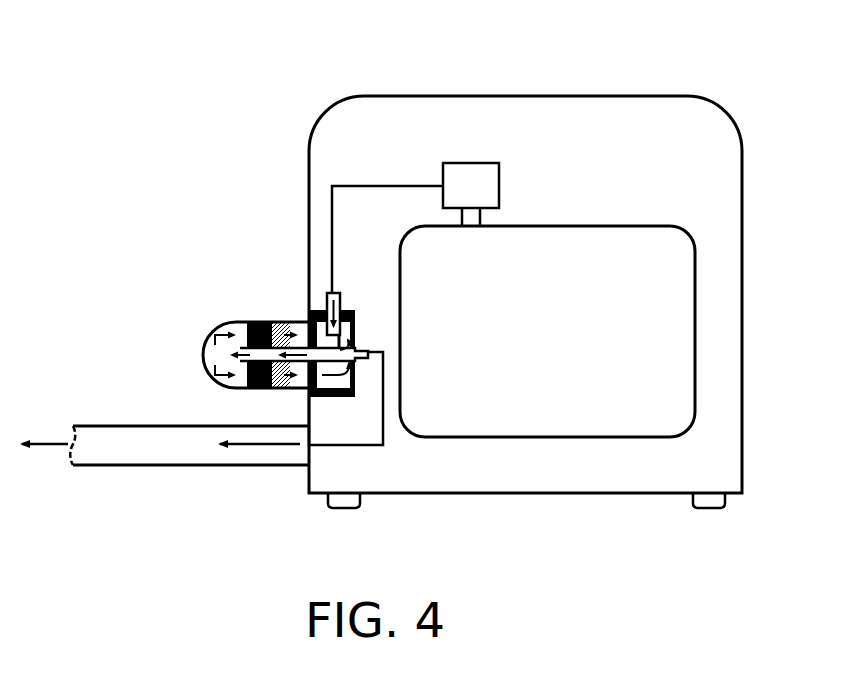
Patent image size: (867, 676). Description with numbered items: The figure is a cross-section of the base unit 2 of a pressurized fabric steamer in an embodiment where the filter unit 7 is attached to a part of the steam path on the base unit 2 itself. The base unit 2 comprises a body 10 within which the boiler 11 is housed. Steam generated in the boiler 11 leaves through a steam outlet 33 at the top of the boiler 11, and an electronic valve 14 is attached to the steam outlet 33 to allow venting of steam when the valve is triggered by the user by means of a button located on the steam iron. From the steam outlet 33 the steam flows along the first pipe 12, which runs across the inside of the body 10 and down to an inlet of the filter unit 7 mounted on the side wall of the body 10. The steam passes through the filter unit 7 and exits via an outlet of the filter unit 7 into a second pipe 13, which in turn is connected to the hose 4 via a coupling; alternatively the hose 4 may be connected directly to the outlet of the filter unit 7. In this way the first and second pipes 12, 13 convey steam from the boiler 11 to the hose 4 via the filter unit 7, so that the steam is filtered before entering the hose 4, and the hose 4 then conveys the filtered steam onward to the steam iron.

The base unit 2 is at (158, 98).
The hose 4 is at (153, 443).
The filter unit 7 is at (206, 335).
The body 10 is at (521, 96).
The boiler 11 is at (563, 341).
The first pipe 12 is at (378, 186).
The second pipe 13 is at (366, 447).
The electronic valve 14 is at (490, 182).
The steam outlet 33 is at (480, 218).